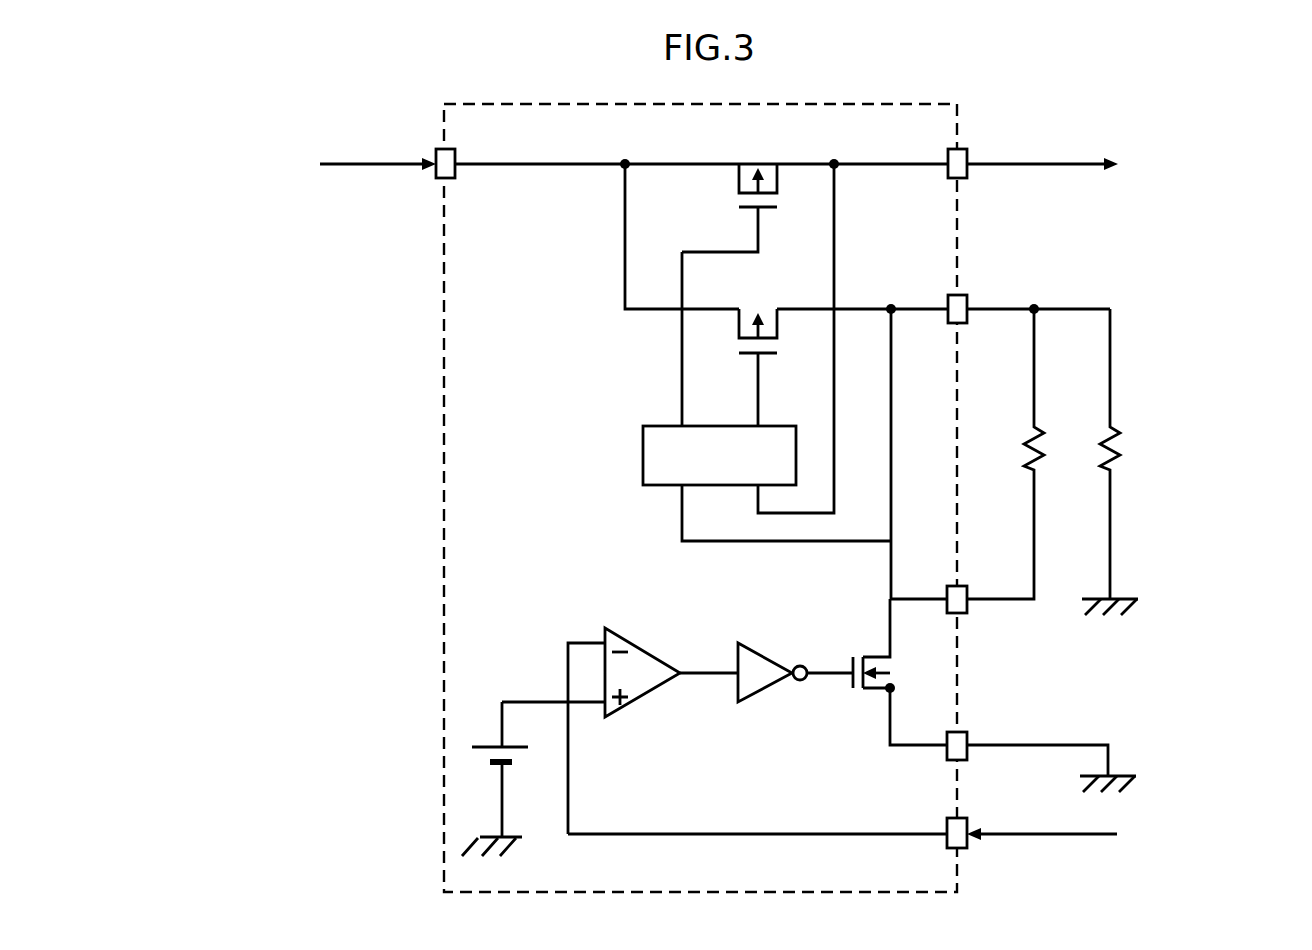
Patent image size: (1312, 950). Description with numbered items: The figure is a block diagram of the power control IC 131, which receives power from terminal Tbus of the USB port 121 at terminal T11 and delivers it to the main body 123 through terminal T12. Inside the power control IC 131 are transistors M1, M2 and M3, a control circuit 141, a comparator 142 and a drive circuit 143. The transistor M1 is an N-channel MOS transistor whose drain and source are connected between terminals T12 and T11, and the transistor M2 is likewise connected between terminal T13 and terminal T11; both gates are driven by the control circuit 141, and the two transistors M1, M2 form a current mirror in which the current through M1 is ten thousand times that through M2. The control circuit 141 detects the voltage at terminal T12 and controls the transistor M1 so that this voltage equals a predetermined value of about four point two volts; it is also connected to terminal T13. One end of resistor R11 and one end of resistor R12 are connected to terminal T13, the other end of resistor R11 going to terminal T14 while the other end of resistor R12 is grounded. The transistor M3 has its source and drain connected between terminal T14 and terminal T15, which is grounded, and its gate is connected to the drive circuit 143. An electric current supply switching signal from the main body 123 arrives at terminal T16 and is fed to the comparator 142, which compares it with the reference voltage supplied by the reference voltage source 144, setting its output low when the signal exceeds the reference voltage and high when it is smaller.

The power control IC 131 is at (440, 104).
The terminal T11 is at (436, 180).
The terminal T12 is at (967, 152).
The terminal T13 is at (967, 296).
The terminal T14 is at (967, 585).
The terminal T15 is at (967, 733).
The terminal T16 is at (967, 818).
The transistor M1 is at (729, 194).
The transistor M2 is at (757, 354).
The transistor M3 is at (900, 672).
The resistor R11 is at (1043, 437).
The resistor R12 is at (1118, 437).
The control circuit 141 is at (660, 425).
The comparator 142 is at (653, 652).
The drive circuit 143 is at (770, 653).
The reference voltage source 144 is at (492, 745).
The USB port 121 is at (280, 163).
The main body 123 is at (1131, 165).